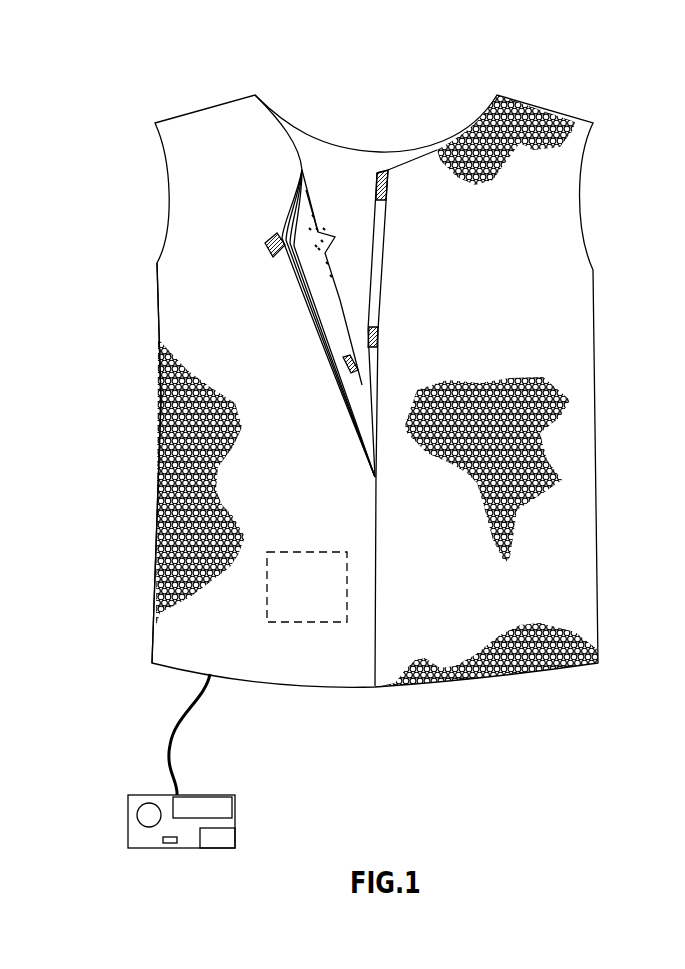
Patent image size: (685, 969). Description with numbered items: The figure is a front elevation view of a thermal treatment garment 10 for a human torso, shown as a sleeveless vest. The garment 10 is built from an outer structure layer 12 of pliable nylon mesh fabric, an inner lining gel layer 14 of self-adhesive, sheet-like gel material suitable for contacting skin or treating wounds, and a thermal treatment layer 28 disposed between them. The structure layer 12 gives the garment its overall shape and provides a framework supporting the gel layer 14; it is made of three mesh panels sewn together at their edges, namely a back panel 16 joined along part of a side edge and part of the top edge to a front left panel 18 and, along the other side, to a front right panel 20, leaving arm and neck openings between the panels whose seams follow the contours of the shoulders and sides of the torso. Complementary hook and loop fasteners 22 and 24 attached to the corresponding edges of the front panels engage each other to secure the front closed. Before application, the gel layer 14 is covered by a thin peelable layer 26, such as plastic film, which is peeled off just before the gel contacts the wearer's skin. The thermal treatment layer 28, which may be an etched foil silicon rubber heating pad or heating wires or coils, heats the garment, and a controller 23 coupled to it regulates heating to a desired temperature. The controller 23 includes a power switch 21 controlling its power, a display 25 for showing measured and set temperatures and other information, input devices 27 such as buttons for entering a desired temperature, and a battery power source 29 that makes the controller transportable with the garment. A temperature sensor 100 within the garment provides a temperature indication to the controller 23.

The garment 10 is at (583, 95).
The structure layer 12 is at (268, 240).
The gel layer 14 is at (293, 207).
The back panel 16 is at (322, 145).
The front left panel 18 is at (555, 400).
The front right panel 20 is at (168, 314).
The power switch 21 is at (137, 815).
The hook and loop fastener 22 is at (388, 183).
The controller 23 is at (142, 787).
The hook and loop fastener 24 is at (275, 258).
The display 25 is at (215, 808).
The peelable layer 26 is at (318, 224).
The input devices 27 is at (176, 846).
The thermal treatment layer 28 is at (287, 224).
The power source 29 is at (217, 848).
The temperature sensor 100 is at (313, 622).